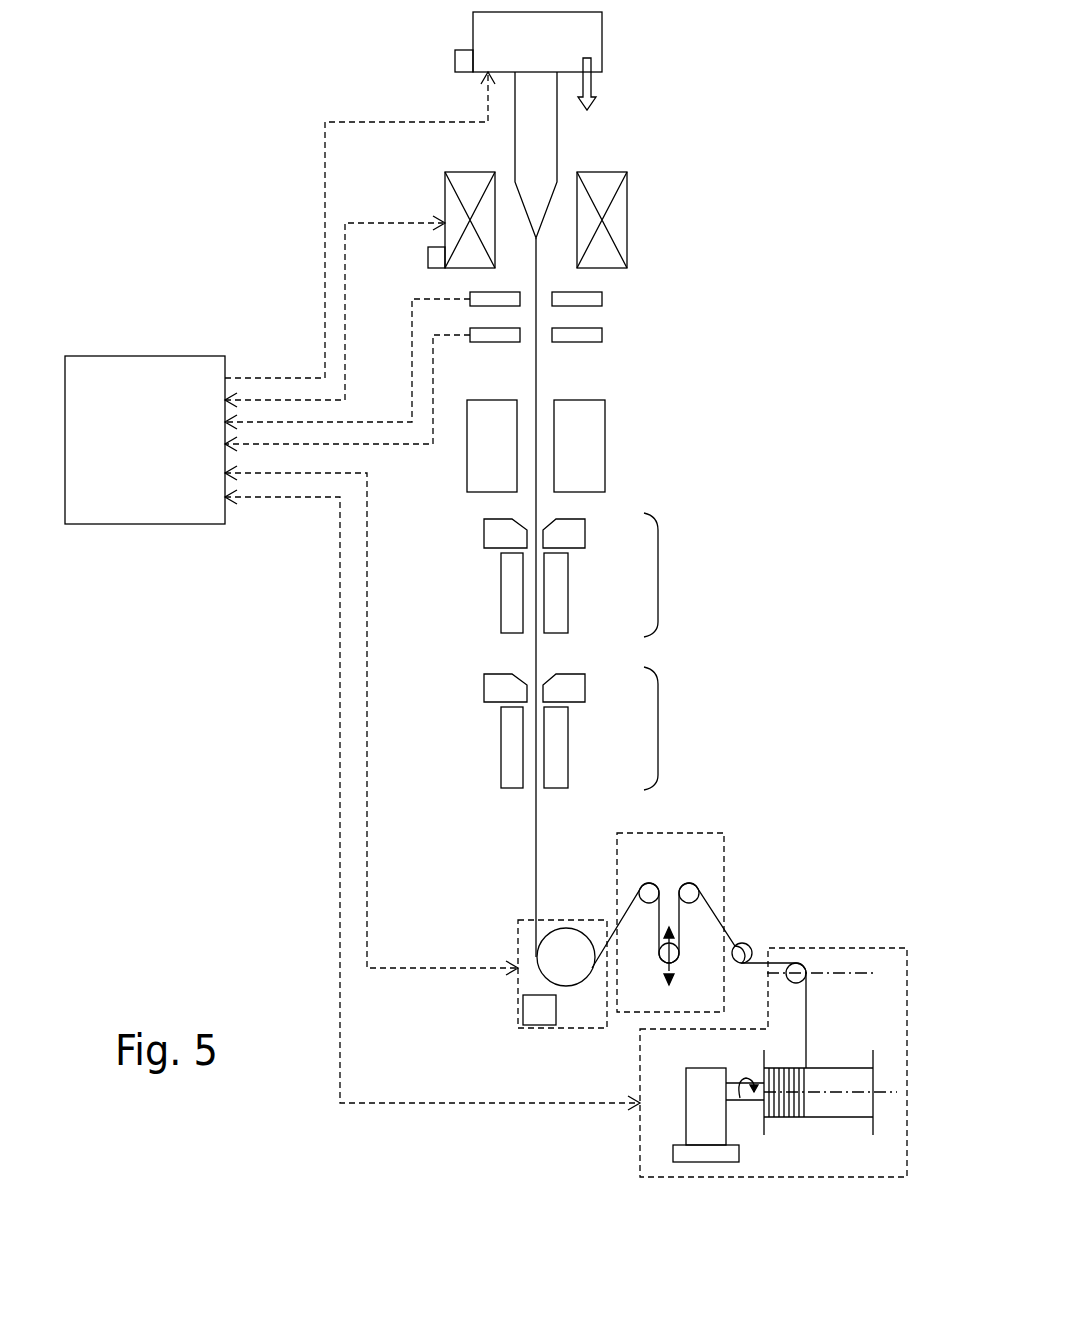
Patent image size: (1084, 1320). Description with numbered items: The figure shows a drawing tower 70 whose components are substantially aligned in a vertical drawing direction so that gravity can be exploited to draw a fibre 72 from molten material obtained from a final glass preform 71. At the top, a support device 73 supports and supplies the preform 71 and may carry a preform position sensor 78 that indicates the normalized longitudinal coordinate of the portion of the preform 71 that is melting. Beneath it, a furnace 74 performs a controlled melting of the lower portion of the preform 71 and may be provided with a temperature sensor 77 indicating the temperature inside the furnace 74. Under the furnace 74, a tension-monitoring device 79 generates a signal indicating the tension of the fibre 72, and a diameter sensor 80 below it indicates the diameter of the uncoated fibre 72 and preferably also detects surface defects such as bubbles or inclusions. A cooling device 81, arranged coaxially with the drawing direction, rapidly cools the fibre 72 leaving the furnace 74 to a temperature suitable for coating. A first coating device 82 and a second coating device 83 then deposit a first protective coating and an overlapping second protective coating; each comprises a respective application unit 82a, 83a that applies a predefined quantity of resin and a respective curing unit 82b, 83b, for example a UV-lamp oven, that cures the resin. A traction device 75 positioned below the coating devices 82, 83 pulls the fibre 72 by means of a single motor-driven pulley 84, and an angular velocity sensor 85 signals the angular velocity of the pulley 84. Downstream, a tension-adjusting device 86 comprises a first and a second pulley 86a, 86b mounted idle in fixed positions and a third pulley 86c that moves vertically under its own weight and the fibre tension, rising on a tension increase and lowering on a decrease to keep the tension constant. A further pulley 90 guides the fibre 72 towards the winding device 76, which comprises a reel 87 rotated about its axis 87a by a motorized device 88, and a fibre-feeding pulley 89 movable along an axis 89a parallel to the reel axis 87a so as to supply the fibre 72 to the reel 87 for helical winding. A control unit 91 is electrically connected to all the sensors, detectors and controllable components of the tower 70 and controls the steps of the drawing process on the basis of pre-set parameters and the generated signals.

The drawing tower 70 is at (696, 146).
The glass preform 71 is at (538, 152).
The fibre 72 is at (538, 377).
The support device 73 is at (598, 42).
The furnace 74 is at (617, 237).
The traction device 75 is at (520, 921).
The winding device 76 is at (852, 1170).
The temperature sensor 77 is at (433, 260).
The preform position sensor 78 is at (457, 67).
The tension-monitoring device 79 is at (600, 298).
The diameter sensor 80 is at (600, 335).
The cooling device 81 is at (602, 437).
The first coating device 82 is at (678, 568).
The application unit 82a is at (573, 535).
The curing unit 82b is at (562, 587).
The second coating device 83 is at (692, 738).
The application unit 83a is at (573, 690).
The curing unit 83b is at (562, 748).
The motor-driven pulley 84 is at (575, 982).
The angular velocity sensor 85 is at (533, 1018).
The tension-adjusting device 86 is at (723, 875).
The first pulley 86a is at (646, 883).
The second pulley 86b is at (690, 883).
The third pulley 86c is at (680, 960).
The reel 87 is at (823, 1072).
The reel axis 87a is at (883, 1090).
The motorized device 88 is at (720, 1162).
The fibre-feeding pulley 89 is at (798, 963).
The slide axis 89a is at (845, 972).
The further pulley 90 is at (745, 944).
The control unit 91 is at (84, 362).